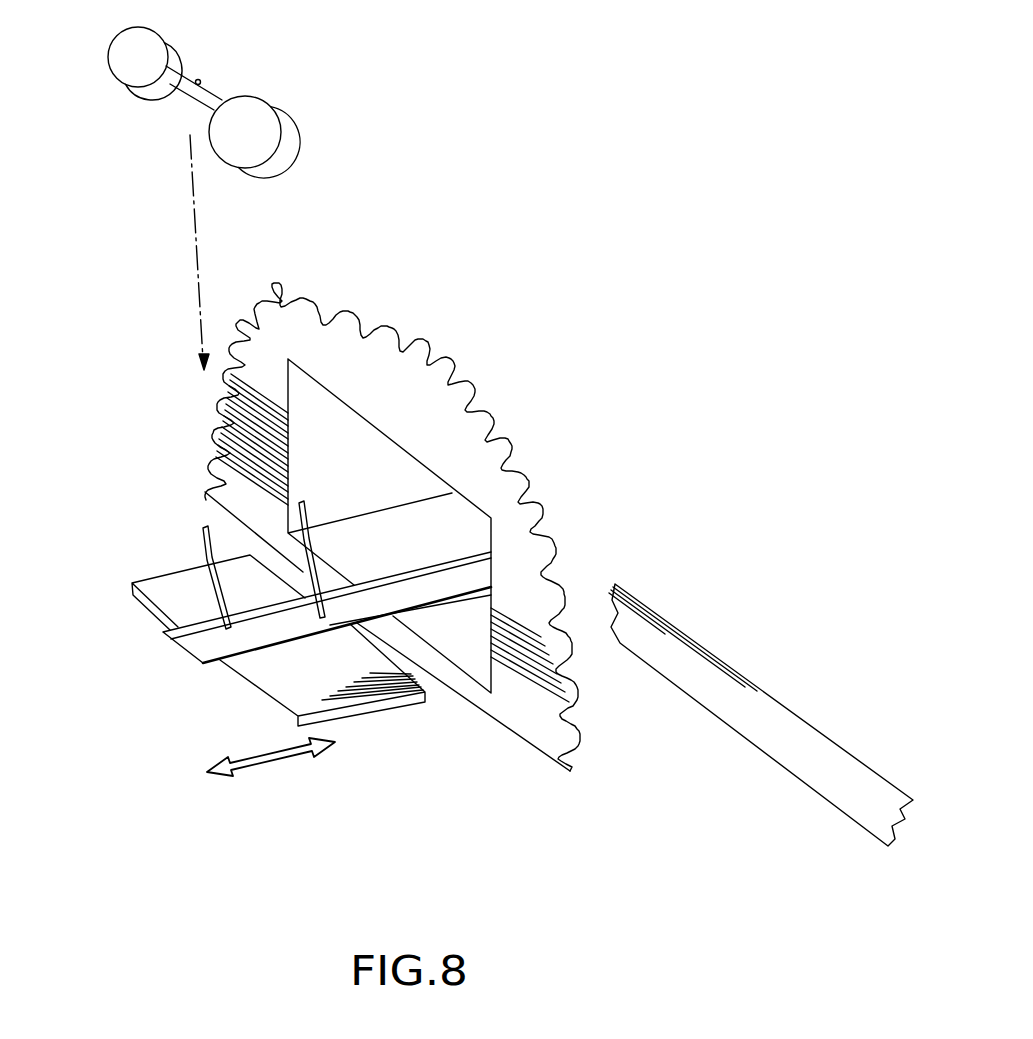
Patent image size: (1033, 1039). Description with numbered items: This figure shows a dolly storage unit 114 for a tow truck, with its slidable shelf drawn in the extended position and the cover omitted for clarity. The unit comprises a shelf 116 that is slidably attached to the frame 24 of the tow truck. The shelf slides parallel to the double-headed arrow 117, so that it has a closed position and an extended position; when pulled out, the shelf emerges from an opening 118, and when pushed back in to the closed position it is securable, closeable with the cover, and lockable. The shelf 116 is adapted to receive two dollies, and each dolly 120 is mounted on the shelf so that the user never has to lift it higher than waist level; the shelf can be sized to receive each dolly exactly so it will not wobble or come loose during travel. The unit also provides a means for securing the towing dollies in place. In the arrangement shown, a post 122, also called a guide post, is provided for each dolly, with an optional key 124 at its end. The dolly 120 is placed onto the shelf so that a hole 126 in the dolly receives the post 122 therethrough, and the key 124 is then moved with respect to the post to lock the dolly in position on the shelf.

The frame 24 is at (810, 758).
The dolly storage unit 114 is at (196, 717).
The shelf 116 is at (160, 588).
The arrow 117 is at (277, 764).
The opening 118 is at (475, 672).
The dolly 120 is at (252, 92).
The post 122 is at (223, 595).
The key 124 is at (205, 545).
The hole 126 is at (203, 72).